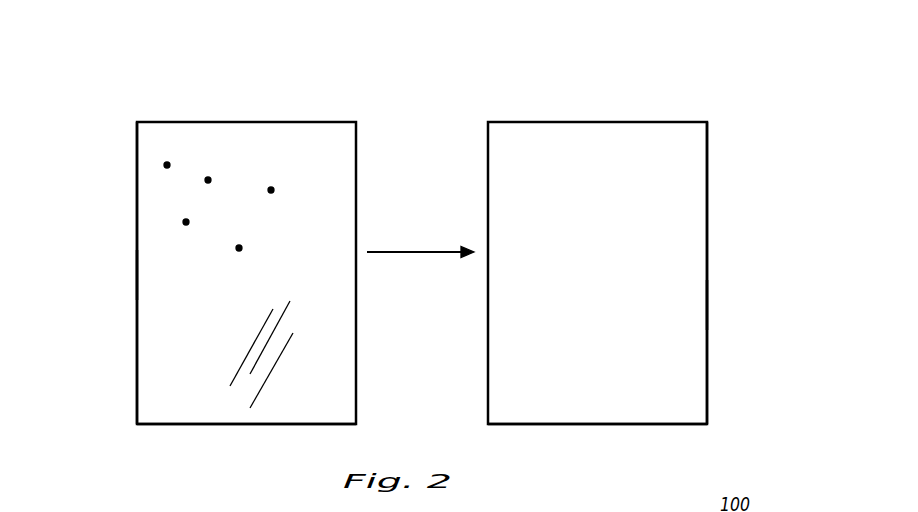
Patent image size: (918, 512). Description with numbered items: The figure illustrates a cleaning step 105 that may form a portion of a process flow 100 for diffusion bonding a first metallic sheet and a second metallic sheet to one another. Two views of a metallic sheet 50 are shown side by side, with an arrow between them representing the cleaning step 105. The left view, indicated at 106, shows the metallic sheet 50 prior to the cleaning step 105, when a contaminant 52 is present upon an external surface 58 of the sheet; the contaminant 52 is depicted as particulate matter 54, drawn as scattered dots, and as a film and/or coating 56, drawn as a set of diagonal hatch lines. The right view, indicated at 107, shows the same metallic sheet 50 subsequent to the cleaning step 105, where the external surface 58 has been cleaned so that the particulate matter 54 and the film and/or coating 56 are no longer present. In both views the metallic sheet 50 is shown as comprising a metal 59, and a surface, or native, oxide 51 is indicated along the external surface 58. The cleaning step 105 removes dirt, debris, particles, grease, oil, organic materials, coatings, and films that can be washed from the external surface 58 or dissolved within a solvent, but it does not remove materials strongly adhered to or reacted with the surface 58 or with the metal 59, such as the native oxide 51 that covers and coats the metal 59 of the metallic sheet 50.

The process flow 100 is at (306, 52).
The cleaning step 105 is at (377, 68).
The state prior to cleaning step 106 is at (82, 170).
The state subsequent to cleaning step 107 is at (752, 117).
The metallic sheet 50 is at (130, 244).
The native oxide 51 is at (162, 276).
The contaminant 52 is at (247, 138).
The particulate matter 54 is at (256, 247).
The film and/or coating 56 is at (310, 327).
The external surface 58 is at (172, 330).
The metal 59 is at (137, 413).